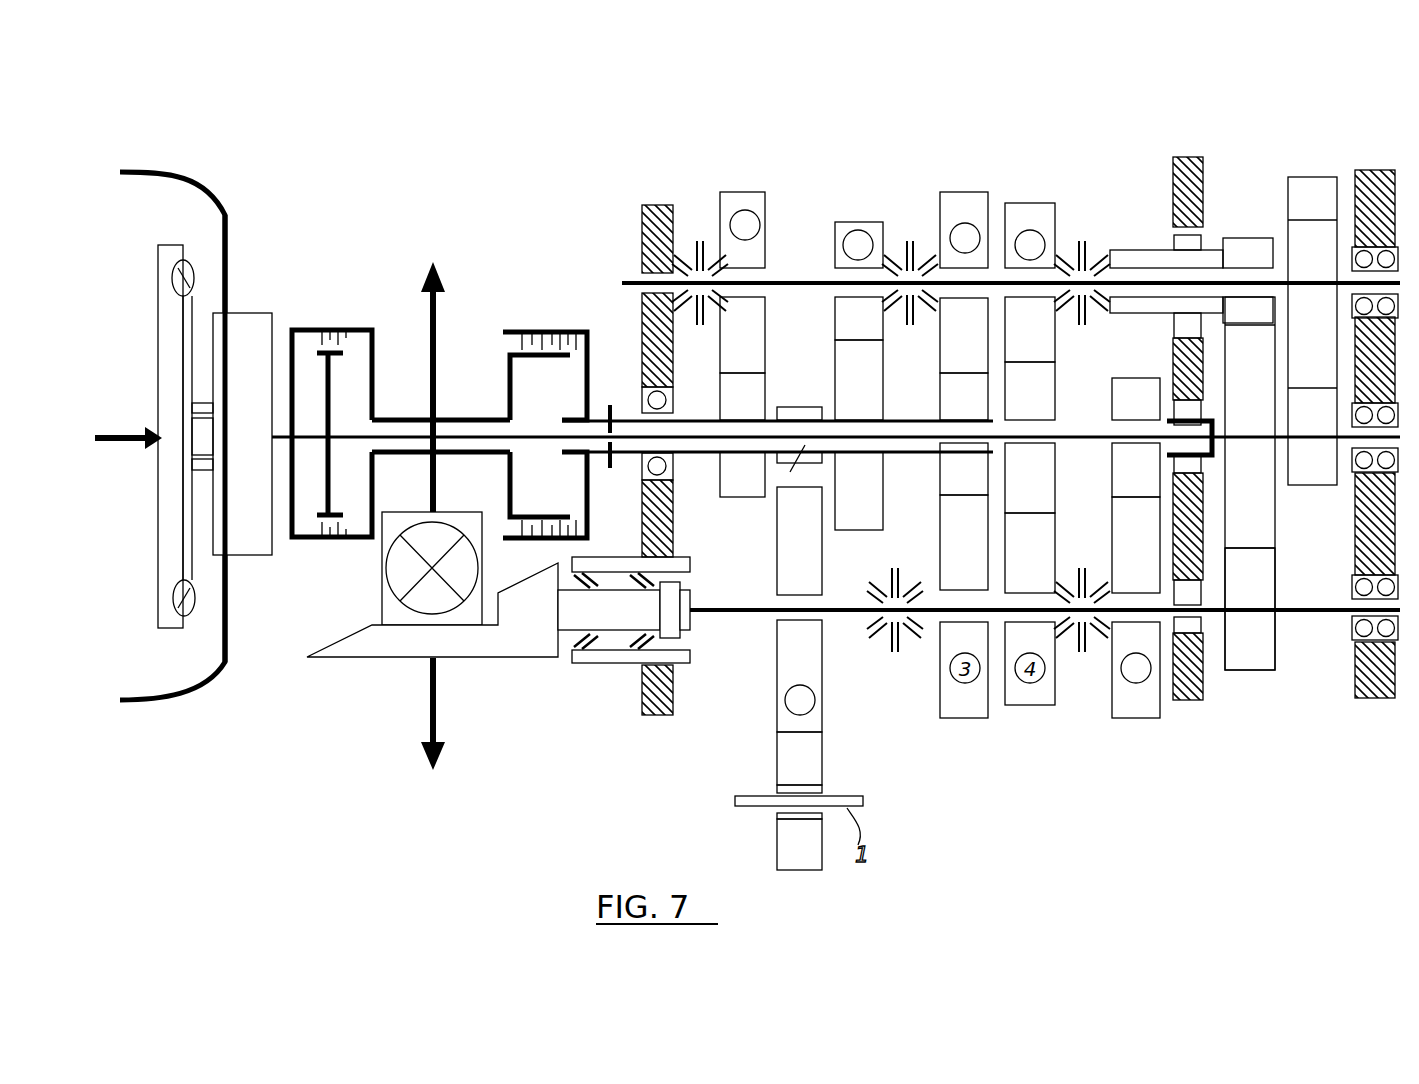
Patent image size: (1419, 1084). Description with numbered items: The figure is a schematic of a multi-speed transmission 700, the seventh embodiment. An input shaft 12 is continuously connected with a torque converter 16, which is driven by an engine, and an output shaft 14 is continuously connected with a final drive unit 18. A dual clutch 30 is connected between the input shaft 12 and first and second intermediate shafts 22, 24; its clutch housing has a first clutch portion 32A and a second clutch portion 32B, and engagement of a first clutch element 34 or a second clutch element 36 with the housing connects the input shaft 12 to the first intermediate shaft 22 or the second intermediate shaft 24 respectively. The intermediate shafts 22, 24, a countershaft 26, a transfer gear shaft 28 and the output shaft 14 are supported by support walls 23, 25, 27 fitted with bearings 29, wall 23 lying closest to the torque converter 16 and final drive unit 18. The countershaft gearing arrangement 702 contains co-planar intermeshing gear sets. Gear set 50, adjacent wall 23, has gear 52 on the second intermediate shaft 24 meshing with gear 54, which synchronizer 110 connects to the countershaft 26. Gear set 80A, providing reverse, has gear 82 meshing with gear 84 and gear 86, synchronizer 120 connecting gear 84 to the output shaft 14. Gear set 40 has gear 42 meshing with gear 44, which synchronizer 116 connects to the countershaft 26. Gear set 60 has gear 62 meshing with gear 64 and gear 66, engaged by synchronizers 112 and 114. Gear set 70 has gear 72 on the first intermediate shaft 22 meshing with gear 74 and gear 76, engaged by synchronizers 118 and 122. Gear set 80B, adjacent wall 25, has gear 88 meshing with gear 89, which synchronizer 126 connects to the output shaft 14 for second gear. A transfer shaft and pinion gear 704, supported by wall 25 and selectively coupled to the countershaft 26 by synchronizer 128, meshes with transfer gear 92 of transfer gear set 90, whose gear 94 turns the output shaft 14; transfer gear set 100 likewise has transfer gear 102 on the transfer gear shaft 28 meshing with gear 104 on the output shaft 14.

The multi-speed transmission 700 is at (275, 170).
The dual clutch 30 is at (388, 292).
The first clutch portion 32A is at (312, 328).
The second clutch portion 32B is at (510, 385).
The first clutch element 34 is at (330, 396).
The second clutch element 36 is at (546, 332).
The first intermediate shaft 22 is at (638, 436).
The second intermediate shaft 24 is at (916, 456).
The bearings 29 is at (645, 268).
The torque converter 16 is at (158, 542).
The input shaft 12 is at (290, 438).
The final drive unit 18 is at (580, 675).
The first support wall 23 is at (655, 717).
The output shaft 14 is at (722, 618).
The gear set 50 is at (728, 182).
The synchronizer 110 is at (708, 255).
The gear 54 is at (760, 352).
The gear 52 is at (760, 484).
The gear 82 is at (798, 406).
The gear 84 is at (815, 668).
The gear 86 is at (806, 860).
The gear set 80A is at (768, 838).
The gear set 40 is at (862, 212).
The gear 44 is at (875, 332).
The gear 42 is at (875, 512).
The synchronizer 116 is at (932, 256).
The synchronizer 114 is at (898, 305).
The gear set 60 is at (966, 188).
The gear 66 is at (980, 344).
The gear 62 is at (980, 482).
The gear 64 is at (980, 557).
The synchronizer 112 is at (925, 583).
The synchronizer 120 is at (845, 635).
The gear set 70 is at (1032, 200).
The gear 76 is at (1046, 334).
The gear 72 is at (1046, 400).
The gear 74 is at (1046, 569).
The synchronizer 128 is at (1100, 255).
The synchronizer 122 is at (1068, 305).
The synchronizer 126 is at (1100, 583).
The synchronizer 118 is at (1068, 635).
The gear 88 is at (1152, 416).
The gear 89 is at (1152, 534).
The gear set 80B is at (1128, 722).
The countershaft 26 is at (1282, 282).
The countershaft gearing arrangement 702 is at (1205, 150).
The transfer shaft and pinion gear 704 is at (1212, 250).
The second support wall 25 is at (1186, 702).
The transfer gear 92 is at (1266, 367).
The transfer gear 94 is at (1266, 592).
The transfer gear set 90 is at (1255, 673).
The transfer gear set 100 is at (1322, 178).
The transfer gear 104 is at (1332, 216).
The transfer gear 102 is at (1332, 426).
The transfer gear shaft 28 is at (1283, 445).
The third support wall 27 is at (1365, 700).